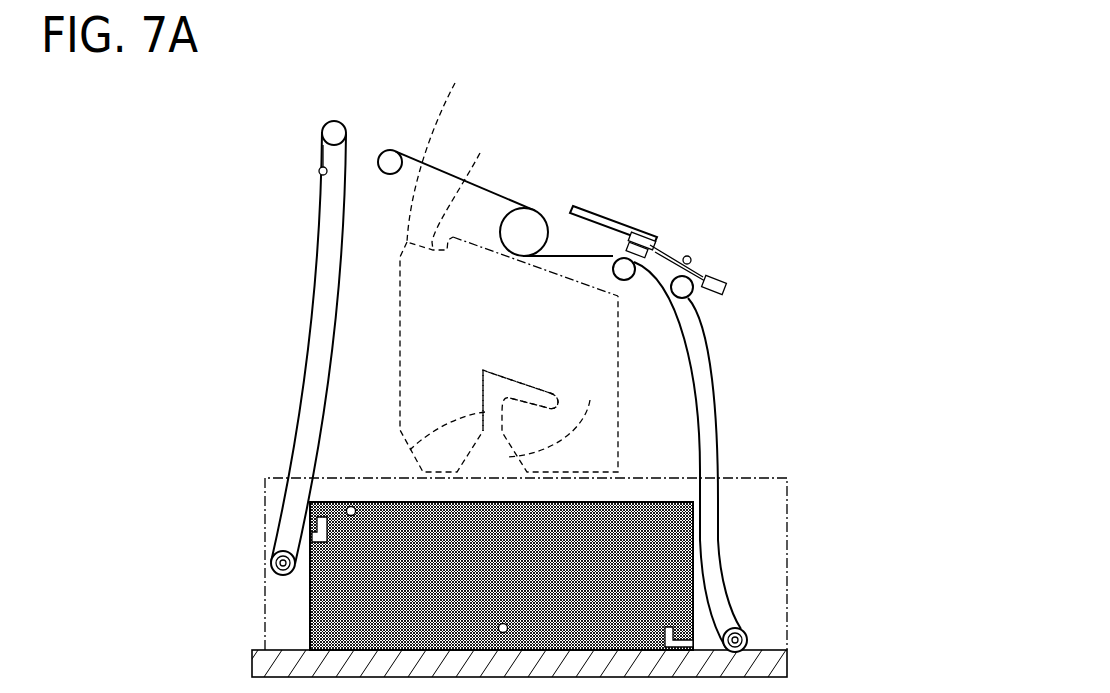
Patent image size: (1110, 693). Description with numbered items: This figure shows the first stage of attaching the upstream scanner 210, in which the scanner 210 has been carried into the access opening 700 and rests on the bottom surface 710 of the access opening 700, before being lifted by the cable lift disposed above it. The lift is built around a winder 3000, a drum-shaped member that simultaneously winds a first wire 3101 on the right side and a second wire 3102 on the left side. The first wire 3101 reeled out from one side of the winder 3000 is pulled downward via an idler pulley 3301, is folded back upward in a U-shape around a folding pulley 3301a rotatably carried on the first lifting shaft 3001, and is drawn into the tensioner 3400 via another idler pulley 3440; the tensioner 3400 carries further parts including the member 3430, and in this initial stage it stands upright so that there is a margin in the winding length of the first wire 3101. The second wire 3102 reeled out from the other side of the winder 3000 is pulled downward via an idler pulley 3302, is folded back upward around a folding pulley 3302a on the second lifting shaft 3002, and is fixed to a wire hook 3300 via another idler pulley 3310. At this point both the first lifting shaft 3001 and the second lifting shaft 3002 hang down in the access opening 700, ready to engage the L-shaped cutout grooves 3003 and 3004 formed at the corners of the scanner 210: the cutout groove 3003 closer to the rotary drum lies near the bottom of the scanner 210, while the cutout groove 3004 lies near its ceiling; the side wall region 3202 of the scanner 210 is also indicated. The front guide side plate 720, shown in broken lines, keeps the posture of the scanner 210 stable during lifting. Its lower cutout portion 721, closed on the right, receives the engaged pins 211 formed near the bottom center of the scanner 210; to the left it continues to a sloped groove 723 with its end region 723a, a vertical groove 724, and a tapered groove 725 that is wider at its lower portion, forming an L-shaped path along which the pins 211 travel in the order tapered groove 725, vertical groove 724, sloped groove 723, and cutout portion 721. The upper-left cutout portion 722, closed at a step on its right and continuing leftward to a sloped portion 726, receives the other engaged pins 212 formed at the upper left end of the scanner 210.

The access opening 700 is at (788, 512).
The bottom surface 710 is at (773, 663).
The front guide side plate 720 is at (400, 303).
The cutout portion 721 is at (552, 390).
The cutout portion 722 is at (467, 186).
The sloped groove 723 is at (527, 383).
The arm end 723a is at (487, 370).
The vertical groove 724 is at (408, 447).
The tapered groove 725 is at (559, 413).
The sloped portion 726 is at (442, 153).
The upstream scanner 210 is at (654, 528).
The engaged pin 211 is at (504, 622).
The engaged pin 212 is at (357, 517).
The winder 3000 is at (524, 228).
The first lifting shaft 3001 is at (747, 637).
The second lifting shaft 3002 is at (280, 552).
The cutout groove 3003 is at (685, 633).
The cutout groove 3004 is at (312, 542).
The first wire 3101 is at (716, 388).
The second wire 3102 is at (309, 370).
The side wall 3202 is at (308, 613).
The wire hook 3300 is at (318, 171).
The idler pulley 3301 is at (618, 270).
The folding pulley 3301a is at (741, 623).
The idler pulley 3302 is at (389, 157).
The folding pulley 3302a is at (275, 565).
The idler pulley 3310 is at (333, 130).
The tensioner 3400 is at (636, 234).
The lever block 3430 is at (727, 288).
The idler pulley 3440 is at (692, 293).